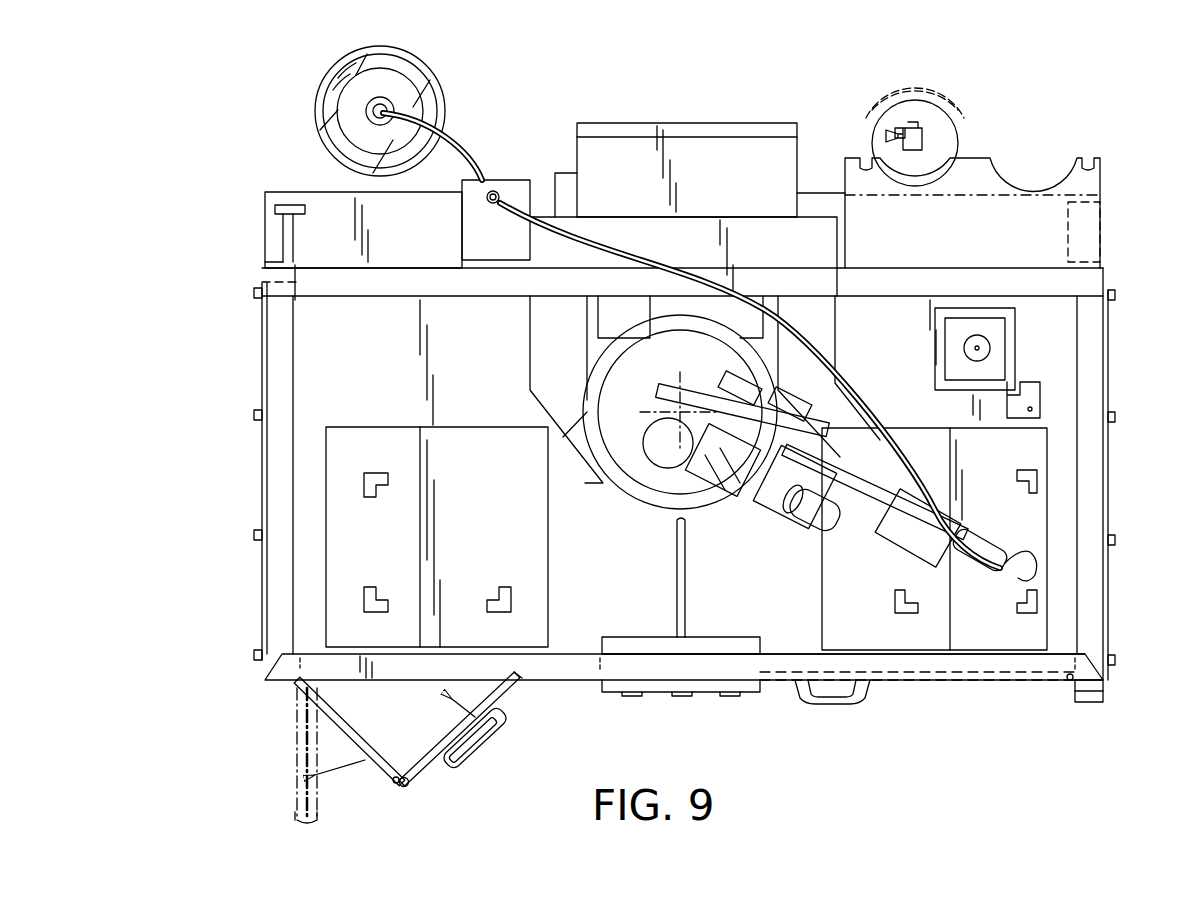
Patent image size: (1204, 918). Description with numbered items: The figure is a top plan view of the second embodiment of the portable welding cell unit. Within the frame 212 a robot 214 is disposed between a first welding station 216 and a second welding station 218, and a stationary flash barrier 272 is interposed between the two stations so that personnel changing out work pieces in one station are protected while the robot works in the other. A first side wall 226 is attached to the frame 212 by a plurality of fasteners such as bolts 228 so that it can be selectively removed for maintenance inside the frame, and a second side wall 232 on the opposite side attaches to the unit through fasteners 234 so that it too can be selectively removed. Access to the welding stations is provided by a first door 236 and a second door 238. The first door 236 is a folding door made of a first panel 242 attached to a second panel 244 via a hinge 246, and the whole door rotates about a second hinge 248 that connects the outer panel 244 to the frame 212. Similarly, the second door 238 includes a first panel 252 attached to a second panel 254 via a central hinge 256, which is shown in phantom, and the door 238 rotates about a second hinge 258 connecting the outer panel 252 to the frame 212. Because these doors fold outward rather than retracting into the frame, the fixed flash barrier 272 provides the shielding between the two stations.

The frame 212 is at (1103, 281).
The robot 214 is at (792, 396).
The first welding station 216 is at (318, 422).
The second welding station 218 is at (1050, 503).
The first side wall 226 is at (262, 512).
The bolts 228 is at (254, 416).
The second side wall 232 is at (1110, 390).
The fasteners 234 is at (1113, 540).
The first door 236 is at (392, 790).
The second door 238 is at (929, 690).
The first panel 242 is at (433, 773).
The second panel 244 is at (372, 763).
The hinge 246 is at (406, 778).
The second hinge 248 is at (296, 684).
The first panel 252 is at (993, 681).
The second panel 254 is at (888, 681).
The central hinge 256 is at (912, 678).
The second hinge 258 is at (1070, 681).
The flash barrier 272 is at (677, 571).